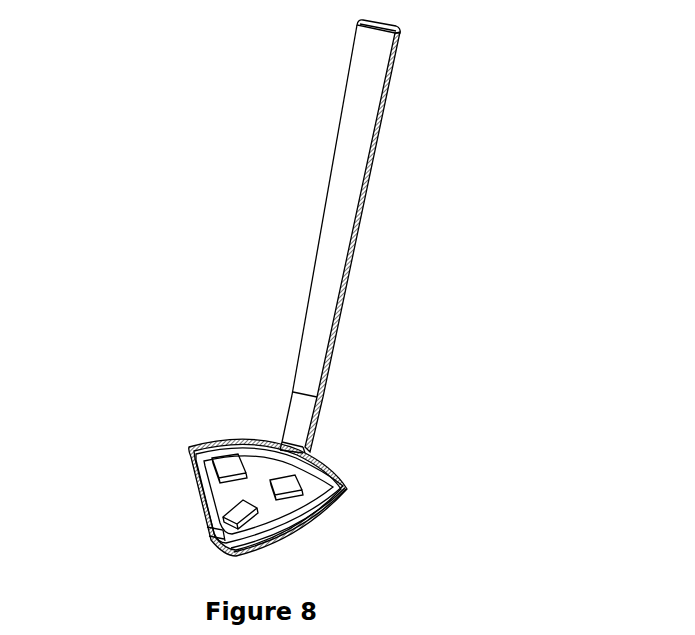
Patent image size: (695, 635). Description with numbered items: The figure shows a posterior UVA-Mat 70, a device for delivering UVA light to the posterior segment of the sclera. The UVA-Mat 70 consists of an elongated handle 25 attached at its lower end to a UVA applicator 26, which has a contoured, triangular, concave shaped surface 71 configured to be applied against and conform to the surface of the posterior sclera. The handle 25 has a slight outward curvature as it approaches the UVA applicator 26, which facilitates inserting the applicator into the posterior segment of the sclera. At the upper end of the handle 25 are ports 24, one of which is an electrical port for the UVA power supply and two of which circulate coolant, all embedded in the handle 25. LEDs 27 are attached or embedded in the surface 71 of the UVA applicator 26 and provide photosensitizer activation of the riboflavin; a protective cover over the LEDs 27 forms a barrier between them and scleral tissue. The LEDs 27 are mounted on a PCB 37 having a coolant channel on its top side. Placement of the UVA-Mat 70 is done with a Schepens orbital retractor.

The ports 24 is at (402, 23).
The handle 25 is at (352, 240).
The UVA applicator 26 is at (212, 549).
The LEDs 27 is at (312, 492).
The PCB 37 is at (207, 499).
The posterior UVA-Mat 70 is at (238, 251).
The contoured, triangular, concave shaped surface 71 is at (260, 472).